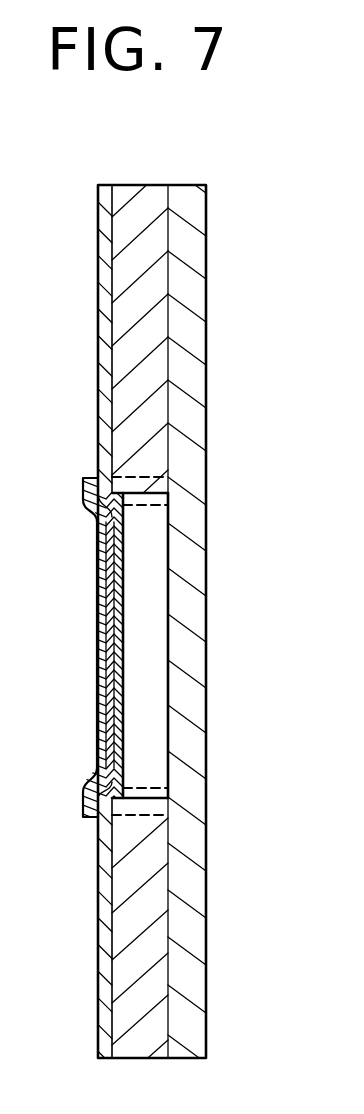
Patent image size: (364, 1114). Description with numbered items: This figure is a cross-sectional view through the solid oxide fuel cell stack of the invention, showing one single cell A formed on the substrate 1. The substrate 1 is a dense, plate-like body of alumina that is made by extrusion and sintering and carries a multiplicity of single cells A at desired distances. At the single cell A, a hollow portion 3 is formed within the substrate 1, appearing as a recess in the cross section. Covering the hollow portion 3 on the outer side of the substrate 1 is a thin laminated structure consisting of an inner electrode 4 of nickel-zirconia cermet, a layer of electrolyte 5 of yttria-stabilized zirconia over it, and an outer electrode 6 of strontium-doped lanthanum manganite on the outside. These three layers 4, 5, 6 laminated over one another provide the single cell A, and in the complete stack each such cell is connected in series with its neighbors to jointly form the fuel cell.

The substrate 1 is at (112, 420).
The hollow portion 3 is at (140, 747).
The inner electrode 4 is at (104, 621).
The electrolyte 5 is at (105, 668).
The outer electrode 6 is at (102, 707).
The single cell A is at (82, 791).